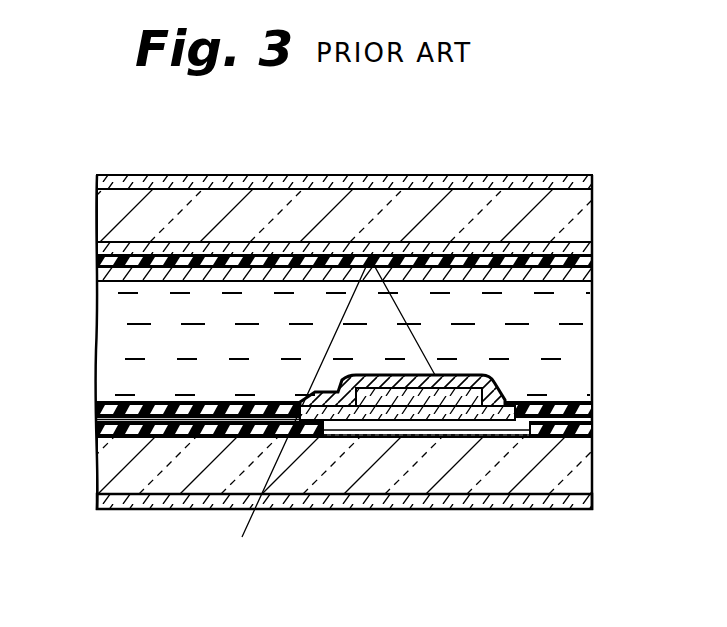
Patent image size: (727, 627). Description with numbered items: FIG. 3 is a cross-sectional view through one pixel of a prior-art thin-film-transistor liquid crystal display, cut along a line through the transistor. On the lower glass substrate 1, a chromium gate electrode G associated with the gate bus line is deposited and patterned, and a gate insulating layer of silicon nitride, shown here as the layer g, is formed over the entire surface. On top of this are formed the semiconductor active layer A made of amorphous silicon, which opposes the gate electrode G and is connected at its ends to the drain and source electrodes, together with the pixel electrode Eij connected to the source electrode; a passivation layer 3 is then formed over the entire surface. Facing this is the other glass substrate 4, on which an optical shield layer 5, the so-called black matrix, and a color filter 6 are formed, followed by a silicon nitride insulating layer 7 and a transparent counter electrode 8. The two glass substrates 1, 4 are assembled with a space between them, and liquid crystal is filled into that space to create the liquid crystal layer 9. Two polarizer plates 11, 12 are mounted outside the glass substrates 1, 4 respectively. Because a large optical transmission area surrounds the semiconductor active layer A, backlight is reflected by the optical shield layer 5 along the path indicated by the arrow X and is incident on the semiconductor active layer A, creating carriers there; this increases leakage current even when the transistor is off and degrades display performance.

The polarizer plate 12 is at (92, 182).
The glass substrate 4 is at (97, 215).
The color filter 6 is at (97, 250).
The insulating layer 7 is at (97, 263).
The transparent counter electrode 8 is at (97, 285).
The optical shield layer 5 is at (595, 250).
The liquid crystal layer 9 is at (103, 362).
The passivation layer 3 is at (97, 407).
The gate electrode G is at (481, 440).
The semiconductor active layer A is at (405, 440).
The pixel electrode Eij is at (178, 438).
The gate insulating layer g is at (97, 433).
The glass substrate 1 is at (97, 475).
The polarizer plate 11 is at (97, 508).
The arrow X is at (242, 537).